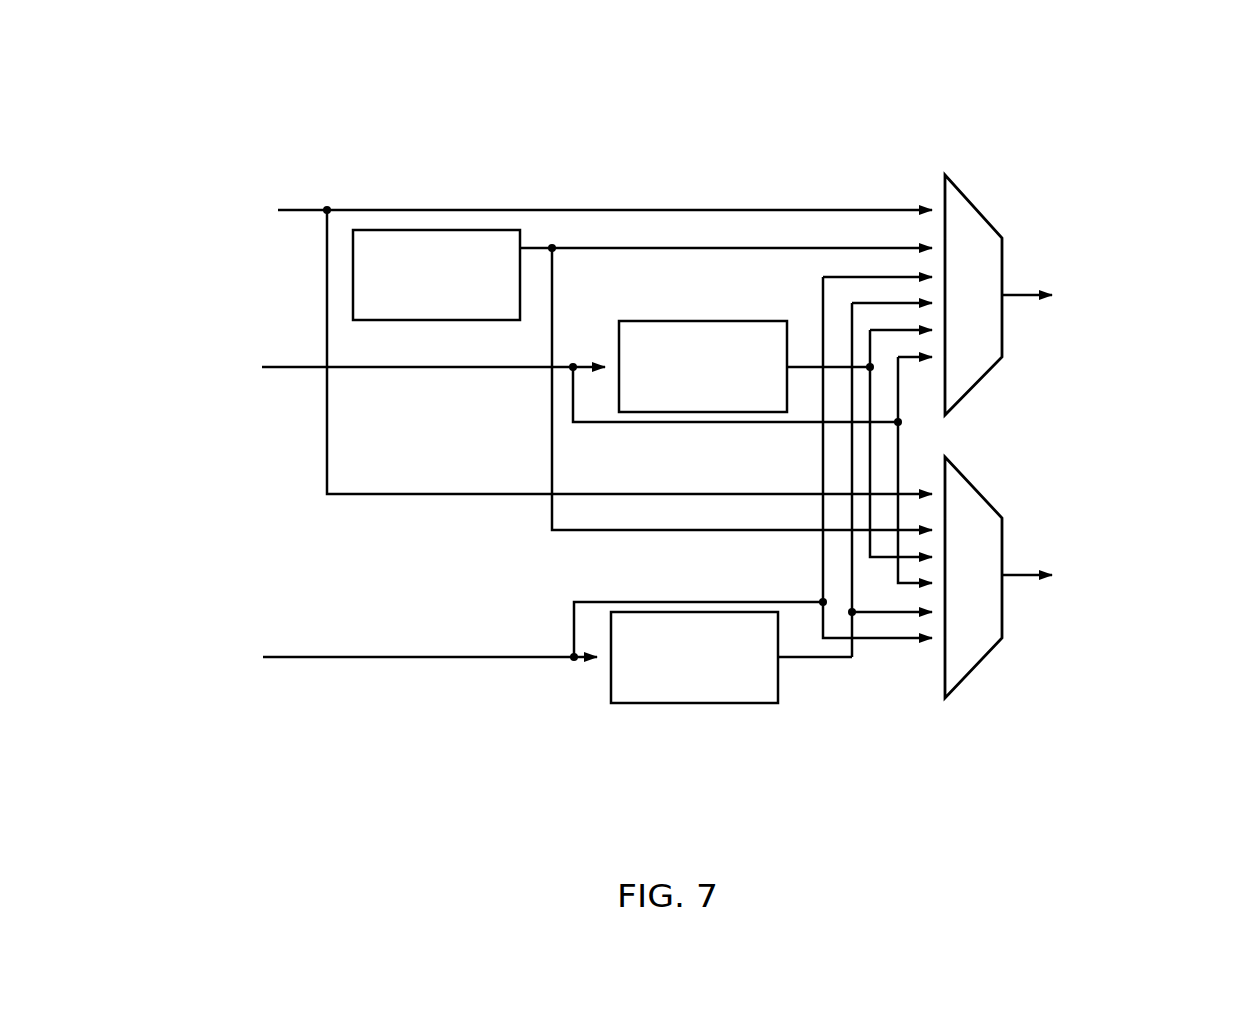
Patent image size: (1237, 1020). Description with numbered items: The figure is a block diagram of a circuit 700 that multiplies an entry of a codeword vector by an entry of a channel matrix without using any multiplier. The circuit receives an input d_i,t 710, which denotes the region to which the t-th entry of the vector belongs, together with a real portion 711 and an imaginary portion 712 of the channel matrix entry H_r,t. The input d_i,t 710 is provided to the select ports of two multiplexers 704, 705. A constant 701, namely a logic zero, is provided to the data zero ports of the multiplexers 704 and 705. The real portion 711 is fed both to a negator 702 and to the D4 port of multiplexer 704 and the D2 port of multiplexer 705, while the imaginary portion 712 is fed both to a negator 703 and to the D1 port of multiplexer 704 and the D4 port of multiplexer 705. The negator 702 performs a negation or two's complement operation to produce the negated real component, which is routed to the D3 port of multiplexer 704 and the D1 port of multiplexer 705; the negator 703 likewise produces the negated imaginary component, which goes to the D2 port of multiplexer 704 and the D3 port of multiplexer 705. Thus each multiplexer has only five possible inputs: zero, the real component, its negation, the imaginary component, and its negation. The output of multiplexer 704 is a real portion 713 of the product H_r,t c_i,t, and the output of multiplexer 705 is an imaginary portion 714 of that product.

The circuit 700 is at (1108, 88).
The constant 701 is at (440, 321).
The negator 702 is at (716, 321).
The negator 703 is at (710, 703).
The multiplexer 704 is at (978, 383).
The multiplexer 705 is at (978, 665).
The input d_i,t 710 is at (296, 212).
The real portion 711 is at (294, 368).
The imaginary portion 712 is at (292, 658).
The real portion 713 is at (1055, 296).
The imaginary portion 714 is at (1055, 576).